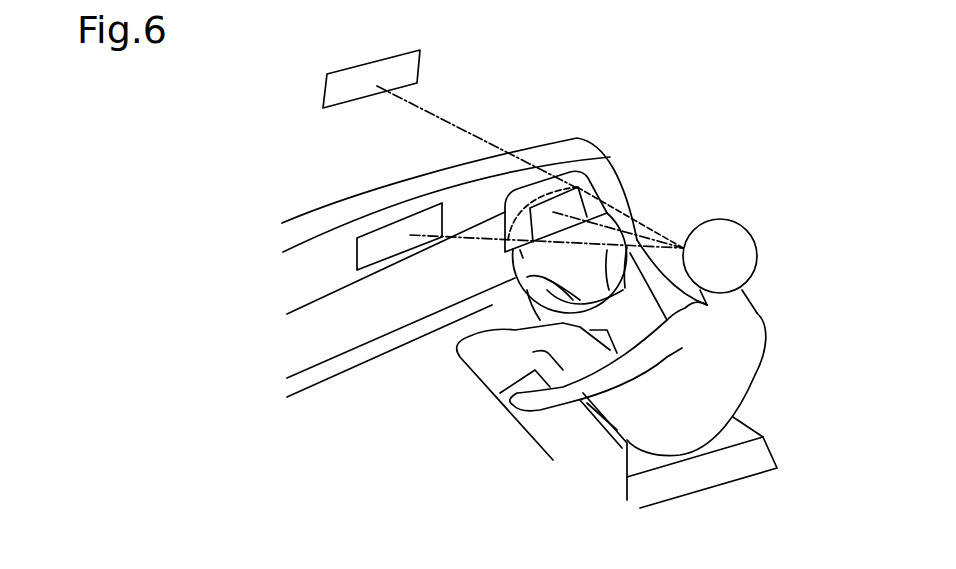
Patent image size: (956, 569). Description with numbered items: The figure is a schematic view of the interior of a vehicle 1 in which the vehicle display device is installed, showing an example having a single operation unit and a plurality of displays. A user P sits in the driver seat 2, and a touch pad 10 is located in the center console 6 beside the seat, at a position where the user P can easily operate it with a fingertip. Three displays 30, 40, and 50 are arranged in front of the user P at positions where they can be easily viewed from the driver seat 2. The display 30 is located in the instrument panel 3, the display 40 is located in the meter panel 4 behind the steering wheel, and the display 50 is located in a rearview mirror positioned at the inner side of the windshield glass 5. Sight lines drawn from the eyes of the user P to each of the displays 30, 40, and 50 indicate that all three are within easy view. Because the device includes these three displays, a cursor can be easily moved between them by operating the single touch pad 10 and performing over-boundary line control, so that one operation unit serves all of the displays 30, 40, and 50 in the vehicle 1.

The vehicle 1 is at (295, 63).
The driver seat 2 is at (757, 428).
The instrument panel 3 is at (360, 273).
The meter panel 4 is at (603, 192).
The windshield glass 5 is at (328, 150).
The center console 6 is at (470, 361).
The touch pad 10 is at (505, 397).
The display 30 is at (357, 258).
The display 40 is at (598, 179).
The display 50 is at (328, 96).
The user P is at (765, 325).